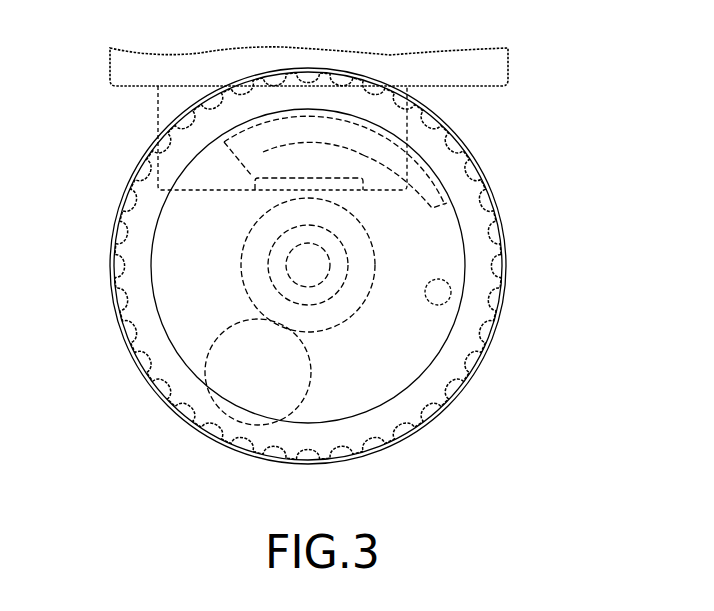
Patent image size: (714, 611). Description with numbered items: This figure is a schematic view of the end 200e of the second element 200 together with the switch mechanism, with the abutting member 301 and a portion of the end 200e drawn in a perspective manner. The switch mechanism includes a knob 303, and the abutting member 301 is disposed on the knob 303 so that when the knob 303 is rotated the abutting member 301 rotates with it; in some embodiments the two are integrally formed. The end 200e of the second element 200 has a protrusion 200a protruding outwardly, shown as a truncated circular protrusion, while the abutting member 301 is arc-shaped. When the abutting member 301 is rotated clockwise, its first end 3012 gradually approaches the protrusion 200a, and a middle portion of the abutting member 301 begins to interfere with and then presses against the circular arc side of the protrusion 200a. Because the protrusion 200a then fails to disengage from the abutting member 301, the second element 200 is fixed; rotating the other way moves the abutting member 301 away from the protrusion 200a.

The second element 200 is at (514, 66).
The protrusion 200a is at (317, 168).
The end of the second element 200e is at (170, 110).
The abutting member 301 is at (273, 137).
The first end of the abutting member 3012 is at (432, 198).
The knob 303 is at (502, 233).